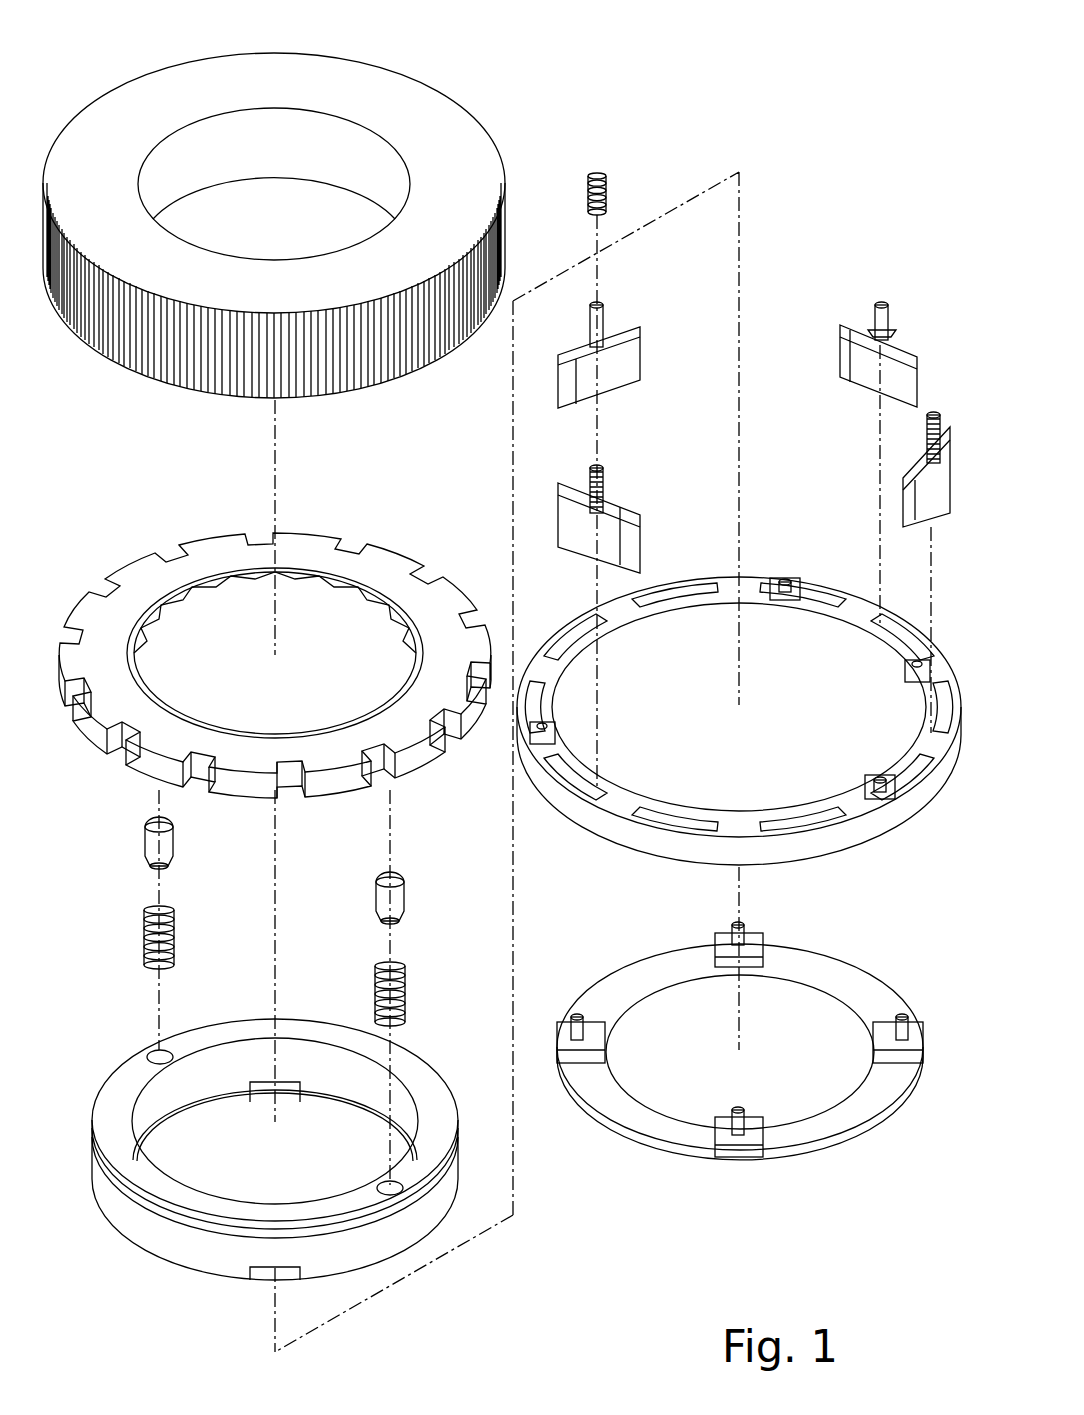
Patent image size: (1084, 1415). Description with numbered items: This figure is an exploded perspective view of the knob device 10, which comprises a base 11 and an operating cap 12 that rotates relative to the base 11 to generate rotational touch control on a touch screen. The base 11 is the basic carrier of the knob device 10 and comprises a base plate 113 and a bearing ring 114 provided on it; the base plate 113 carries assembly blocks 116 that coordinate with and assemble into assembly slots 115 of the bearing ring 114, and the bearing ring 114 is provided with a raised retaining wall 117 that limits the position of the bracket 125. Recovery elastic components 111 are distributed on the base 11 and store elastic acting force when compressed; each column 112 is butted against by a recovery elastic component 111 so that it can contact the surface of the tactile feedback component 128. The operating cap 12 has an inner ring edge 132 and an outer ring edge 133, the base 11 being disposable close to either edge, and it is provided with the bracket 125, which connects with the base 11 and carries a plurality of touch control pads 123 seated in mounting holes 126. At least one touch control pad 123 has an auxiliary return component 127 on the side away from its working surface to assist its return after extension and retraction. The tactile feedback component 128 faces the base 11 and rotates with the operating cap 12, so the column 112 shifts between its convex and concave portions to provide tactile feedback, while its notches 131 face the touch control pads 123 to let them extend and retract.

The knob device 10 is at (840, 66).
The base 11 is at (507, 1148).
The operating cap 12 is at (295, 209).
The recovery elastic components 111 is at (390, 965).
The column 112 is at (393, 880).
The base plate 113 is at (740, 1080).
The bearing ring 114 is at (430, 1212).
The assembly slot 115 is at (260, 1272).
The assembly block 116 is at (757, 1128).
The retaining wall 117 is at (360, 1225).
The touch control pads 123 is at (850, 325).
The bracket 125 is at (739, 750).
The mounting holes 126 is at (801, 812).
The auxiliary return component 127 is at (599, 171).
The tactile feedback component 128 is at (178, 572).
The notches 131 is at (275, 622).
The inner ring edge 132 is at (200, 135).
The outer ring edge 133 is at (413, 82).